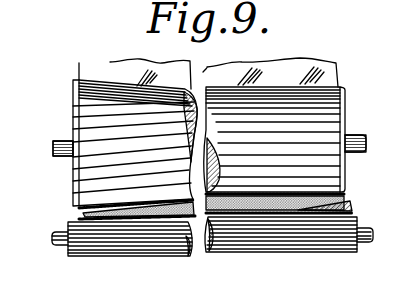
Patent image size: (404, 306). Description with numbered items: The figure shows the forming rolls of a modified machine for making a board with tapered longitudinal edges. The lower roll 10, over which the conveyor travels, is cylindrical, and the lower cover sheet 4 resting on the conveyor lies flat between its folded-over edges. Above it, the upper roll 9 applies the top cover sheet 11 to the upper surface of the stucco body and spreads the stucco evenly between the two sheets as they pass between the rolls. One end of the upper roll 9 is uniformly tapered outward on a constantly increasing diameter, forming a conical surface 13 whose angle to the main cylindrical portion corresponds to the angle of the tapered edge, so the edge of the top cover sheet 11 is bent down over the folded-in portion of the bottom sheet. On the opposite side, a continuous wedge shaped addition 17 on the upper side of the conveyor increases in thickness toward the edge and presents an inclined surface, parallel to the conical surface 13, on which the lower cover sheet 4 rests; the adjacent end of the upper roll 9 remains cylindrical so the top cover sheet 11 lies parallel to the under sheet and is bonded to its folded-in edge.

The upper roll 9 is at (131, 87).
The top cover sheet 11 is at (135, 61).
The conical surface 13 is at (103, 83).
The lower cover sheet 4 is at (149, 223).
The wedge shaped addition 17 is at (354, 211).
The lower roll 10 is at (97, 245).